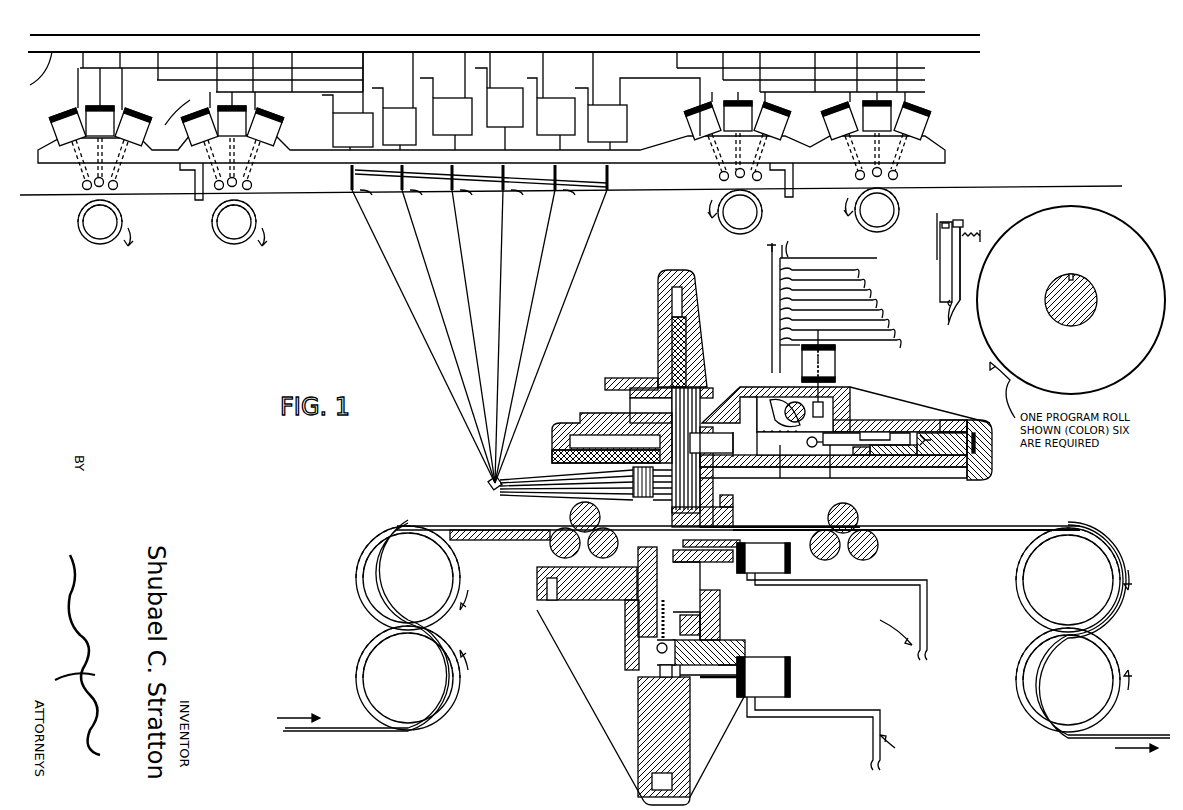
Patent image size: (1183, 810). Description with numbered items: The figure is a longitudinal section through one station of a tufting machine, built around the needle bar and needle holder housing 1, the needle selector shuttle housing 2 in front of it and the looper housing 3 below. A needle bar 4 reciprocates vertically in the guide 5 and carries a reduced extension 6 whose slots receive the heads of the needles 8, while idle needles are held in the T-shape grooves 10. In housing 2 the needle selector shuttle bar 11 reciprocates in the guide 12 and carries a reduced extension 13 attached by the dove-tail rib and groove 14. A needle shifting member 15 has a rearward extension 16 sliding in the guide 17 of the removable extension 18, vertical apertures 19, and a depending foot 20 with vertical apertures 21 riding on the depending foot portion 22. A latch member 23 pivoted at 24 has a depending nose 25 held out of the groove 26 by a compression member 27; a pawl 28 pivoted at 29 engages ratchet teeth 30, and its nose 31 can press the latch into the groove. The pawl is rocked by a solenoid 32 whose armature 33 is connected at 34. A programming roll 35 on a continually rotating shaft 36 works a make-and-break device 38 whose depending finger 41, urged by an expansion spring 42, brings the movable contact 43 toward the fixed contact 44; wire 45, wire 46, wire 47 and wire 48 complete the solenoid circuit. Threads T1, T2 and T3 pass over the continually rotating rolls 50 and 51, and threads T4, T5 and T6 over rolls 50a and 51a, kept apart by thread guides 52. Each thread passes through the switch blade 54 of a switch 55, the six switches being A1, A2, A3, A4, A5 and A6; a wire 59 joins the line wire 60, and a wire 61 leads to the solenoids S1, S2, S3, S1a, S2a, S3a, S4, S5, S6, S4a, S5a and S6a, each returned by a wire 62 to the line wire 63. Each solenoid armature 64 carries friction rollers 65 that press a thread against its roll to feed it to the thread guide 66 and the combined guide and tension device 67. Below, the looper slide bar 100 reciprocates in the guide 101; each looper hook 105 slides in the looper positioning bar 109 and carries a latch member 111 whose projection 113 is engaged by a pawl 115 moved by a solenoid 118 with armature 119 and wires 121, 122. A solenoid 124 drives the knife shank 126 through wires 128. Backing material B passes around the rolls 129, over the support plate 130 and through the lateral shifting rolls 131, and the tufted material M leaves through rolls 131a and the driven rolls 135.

The needle bar and needle holder housing 1 is at (624, 378).
The needle selector shuttle housing 2 is at (911, 405).
The looper housing 3 is at (616, 653).
The needle bar 4 is at (700, 340).
The guide 5 is at (672, 300).
The reduced extension 6 is at (668, 405).
The needle 8 is at (666, 505).
The T-shape grooves 10 is at (640, 388).
The needle selector shuttle bar 11 is at (980, 450).
The guide 12 is at (945, 425).
The reduced extension 13 is at (895, 458).
The dove-tail rib and groove 14 is at (922, 445).
The needle shifting member 15 is at (748, 460).
The rearward extension 16 is at (605, 428).
The guide 17 is at (575, 425).
The removable extension 18 is at (552, 440).
The vertical apertures 19 is at (665, 440).
The depending foot 20 is at (670, 520).
The vertical apertures 21 is at (738, 510).
The depending foot portion 22 is at (760, 520).
The latch member 23 is at (850, 432).
The pivot 24 is at (812, 447).
The depending nose 25 is at (865, 436).
The groove 26 is at (880, 450).
The spring or rubber compression member 27 is at (836, 455).
The pawl 28 is at (760, 405).
The pivot 29 is at (783, 416).
The ratchet teeth 30 is at (779, 455).
The depending nose 31 is at (825, 405).
The solenoid 32 is at (838, 360).
The armature 33 is at (800, 370).
The pivotal connection 34 is at (800, 436).
The programming roll 35 is at (1123, 245).
The continually rotating shaft 36 is at (1100, 298).
The make-and-break device 38 is at (950, 306).
The depending finger 41 is at (956, 305).
The expansion spring 42 is at (985, 237).
The movable contact 43 is at (963, 223).
The fixed contact 44 is at (948, 223).
The wire 45 is at (770, 312).
The wire 46 is at (780, 340).
The wire 47 is at (935, 255).
The wire 48 is at (790, 244).
The continually rotating roll 50 is at (900, 203).
The continually rotating roll 50a is at (78, 228).
The continually rotating roll 51 is at (764, 212).
The continually rotating roll 51a is at (212, 228).
The thread guides 52 is at (180, 182).
The switch blade 54 is at (352, 176).
The switch 55 is at (324, 143).
The wire 59 is at (491, 82).
The line wire 60 is at (620, 40).
The wire 61 is at (502, 97).
The wire 62 is at (104, 95).
The line wire 63 is at (35, 76).
The armature 64 is at (95, 170).
The friction rollers 65 is at (85, 190).
The thread guide 66 is at (485, 480).
The combined guide and tension device 67 is at (633, 495).
The looper slide bar 100 is at (655, 745).
The guide 101 is at (650, 784).
The looper hook 105 is at (670, 612).
The looper positioning bar 109 is at (585, 600).
The latch member 111 is at (655, 668).
The projection 113 is at (680, 685).
The pawl 115 is at (700, 625).
The solenoid 118 is at (790, 672).
The armature 119 is at (745, 680).
The wire 121 is at (850, 712).
The wire 122 is at (845, 720).
The solenoid 124 is at (762, 573).
The knife shank 126 is at (713, 562).
The wires 128 is at (935, 600).
The rolls 129 is at (365, 655).
The support plate 130 is at (495, 540).
The lateral shifting rolls 131 is at (550, 548).
The lateral shifting rolls 131a is at (880, 545).
The driven rolls 135 is at (1110, 640).
The switch A1 is at (607, 123).
The switch A2 is at (556, 116).
The switch A3 is at (505, 107).
The switch A4 is at (452, 116).
The switch A5 is at (399, 126).
The switch A6 is at (353, 130).
The solenoid S1 is at (839, 121).
The solenoid S2 is at (877, 116).
The solenoid S3 is at (912, 121).
The solenoid S1a is at (702, 121).
The solenoid S2a is at (738, 116).
The solenoid S3a is at (772, 121).
The solenoid S4 is at (67, 127).
The solenoid S5 is at (100, 121).
The solenoid S6 is at (133, 127).
The solenoid S4a is at (199, 127).
The solenoid S5a is at (232, 121).
The solenoid S6a is at (265, 127).
The thread T1 is at (602, 192).
The thread T2 is at (571, 200).
The thread T3 is at (520, 195).
The thread T4 is at (450, 195).
The thread T5 is at (410, 195).
The thread T6 is at (355, 200).
The backing material B is at (355, 731).
The tufted material M is at (975, 530).